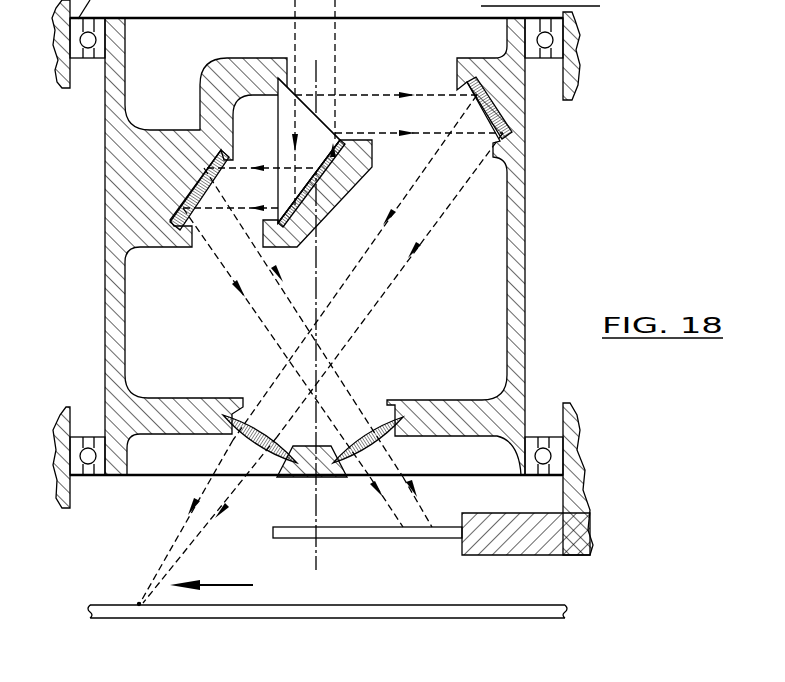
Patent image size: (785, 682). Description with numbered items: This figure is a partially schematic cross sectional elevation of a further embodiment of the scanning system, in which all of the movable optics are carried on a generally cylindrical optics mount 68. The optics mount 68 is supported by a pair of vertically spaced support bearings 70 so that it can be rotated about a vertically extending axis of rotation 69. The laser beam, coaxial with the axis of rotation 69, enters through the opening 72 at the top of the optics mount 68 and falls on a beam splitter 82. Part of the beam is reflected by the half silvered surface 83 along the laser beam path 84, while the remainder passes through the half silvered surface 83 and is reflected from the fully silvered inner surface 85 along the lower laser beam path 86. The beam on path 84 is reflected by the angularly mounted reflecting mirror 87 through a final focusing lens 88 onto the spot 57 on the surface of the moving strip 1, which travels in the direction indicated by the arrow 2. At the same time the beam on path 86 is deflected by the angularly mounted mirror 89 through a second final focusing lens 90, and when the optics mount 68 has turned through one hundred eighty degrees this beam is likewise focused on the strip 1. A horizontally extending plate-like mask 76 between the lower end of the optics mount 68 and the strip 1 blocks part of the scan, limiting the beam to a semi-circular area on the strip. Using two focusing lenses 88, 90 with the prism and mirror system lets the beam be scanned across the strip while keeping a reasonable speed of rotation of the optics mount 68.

The strip 1 is at (273, 597).
The direction of movement 2 is at (215, 583).
The spot 57 is at (131, 591).
The optics mount 68 is at (532, 147).
The axis of rotation 69 is at (318, 281).
The support bearings 70 is at (562, 50).
The opening 72 is at (207, 30).
The mask 76 is at (295, 535).
The beam splitter 82 is at (270, 125).
The half silvered surface 83 is at (297, 100).
The laser beam path 84 is at (380, 93).
The fully silvered inner surface 85 is at (310, 217).
The lower laser beam path 86 is at (237, 207).
The reflecting mirror 87 is at (492, 102).
The final focusing lens 88 is at (258, 426).
The mirror 89 is at (197, 173).
The final focusing lens 90 is at (368, 418).